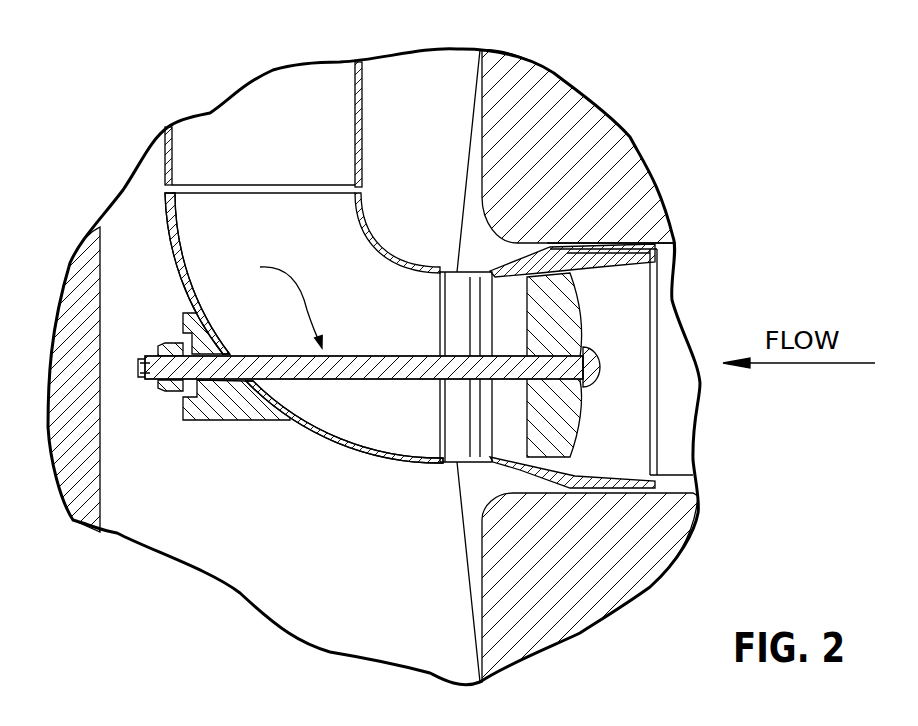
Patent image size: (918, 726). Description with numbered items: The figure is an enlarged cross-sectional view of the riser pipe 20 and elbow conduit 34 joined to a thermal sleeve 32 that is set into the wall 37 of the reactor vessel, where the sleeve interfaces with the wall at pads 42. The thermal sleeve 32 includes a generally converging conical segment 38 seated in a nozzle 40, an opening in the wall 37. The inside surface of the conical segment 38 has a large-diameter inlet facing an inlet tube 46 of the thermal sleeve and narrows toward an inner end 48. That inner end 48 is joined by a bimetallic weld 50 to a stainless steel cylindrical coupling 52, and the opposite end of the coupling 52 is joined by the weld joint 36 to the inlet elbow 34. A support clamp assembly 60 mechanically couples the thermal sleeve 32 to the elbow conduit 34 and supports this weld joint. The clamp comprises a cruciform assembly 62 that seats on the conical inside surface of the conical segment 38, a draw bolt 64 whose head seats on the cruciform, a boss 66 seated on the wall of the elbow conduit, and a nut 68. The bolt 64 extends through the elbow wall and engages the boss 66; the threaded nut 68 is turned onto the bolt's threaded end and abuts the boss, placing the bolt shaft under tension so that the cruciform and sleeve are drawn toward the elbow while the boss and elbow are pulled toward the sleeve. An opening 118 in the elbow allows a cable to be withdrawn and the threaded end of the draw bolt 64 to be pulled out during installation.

The riser pipe 20 is at (352, 125).
The thermal sleeve 32 is at (600, 253).
The elbow conduit 34 is at (408, 258).
The RS-1 weld joint 36 is at (440, 463).
The wall of the reactor vessel 37 is at (560, 117).
The conical segment 38 is at (660, 278).
The nozzle 40 is at (560, 246).
The pads 42 is at (577, 217).
The inlet tube 46 is at (673, 340).
The inner end 48 is at (466, 492).
The bimetallic weld 50 is at (488, 268).
The cylindrical coupling 52 is at (447, 268).
The support clamp assembly 60 is at (274, 302).
The cruciform assembly 62 is at (578, 320).
The draw bolt 64 is at (320, 382).
The boss 66 is at (203, 422).
The nut 68 is at (172, 347).
The opening 118 is at (236, 352).